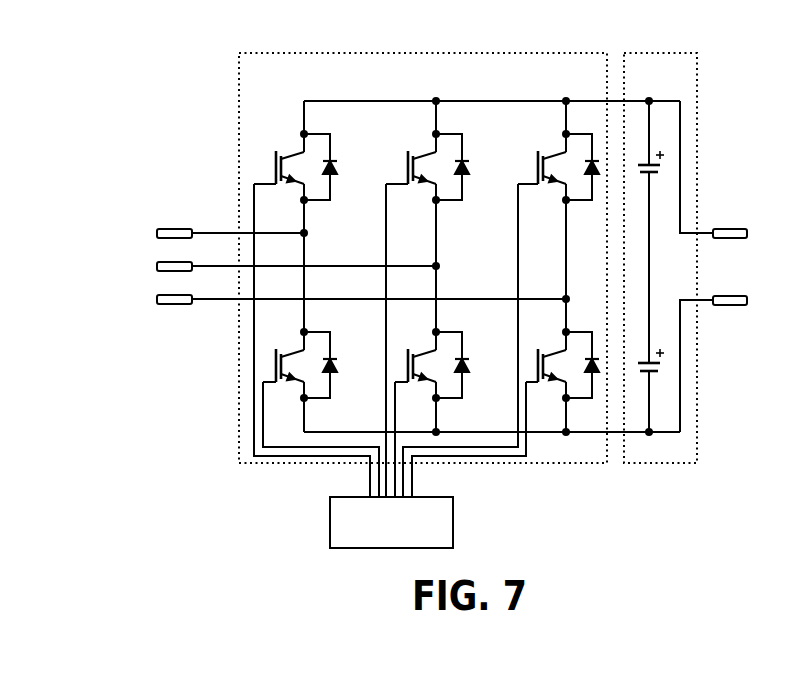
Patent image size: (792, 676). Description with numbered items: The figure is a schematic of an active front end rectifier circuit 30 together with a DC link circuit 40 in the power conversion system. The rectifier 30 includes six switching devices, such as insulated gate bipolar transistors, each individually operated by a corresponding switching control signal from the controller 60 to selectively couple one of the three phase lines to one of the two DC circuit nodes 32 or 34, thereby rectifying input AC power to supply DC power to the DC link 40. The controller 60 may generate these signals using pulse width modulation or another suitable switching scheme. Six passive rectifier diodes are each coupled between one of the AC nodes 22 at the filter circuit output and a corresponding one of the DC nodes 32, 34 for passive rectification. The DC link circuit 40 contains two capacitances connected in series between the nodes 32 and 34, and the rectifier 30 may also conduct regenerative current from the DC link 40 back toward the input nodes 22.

The AC nodes 22 is at (190, 338).
The active front end rectifier circuit 30 is at (238, 72).
The DC circuit node 32 is at (370, 101).
The DC circuit node 34 is at (372, 432).
The DC link circuit 40 is at (699, 75).
The controller 60 is at (330, 523).